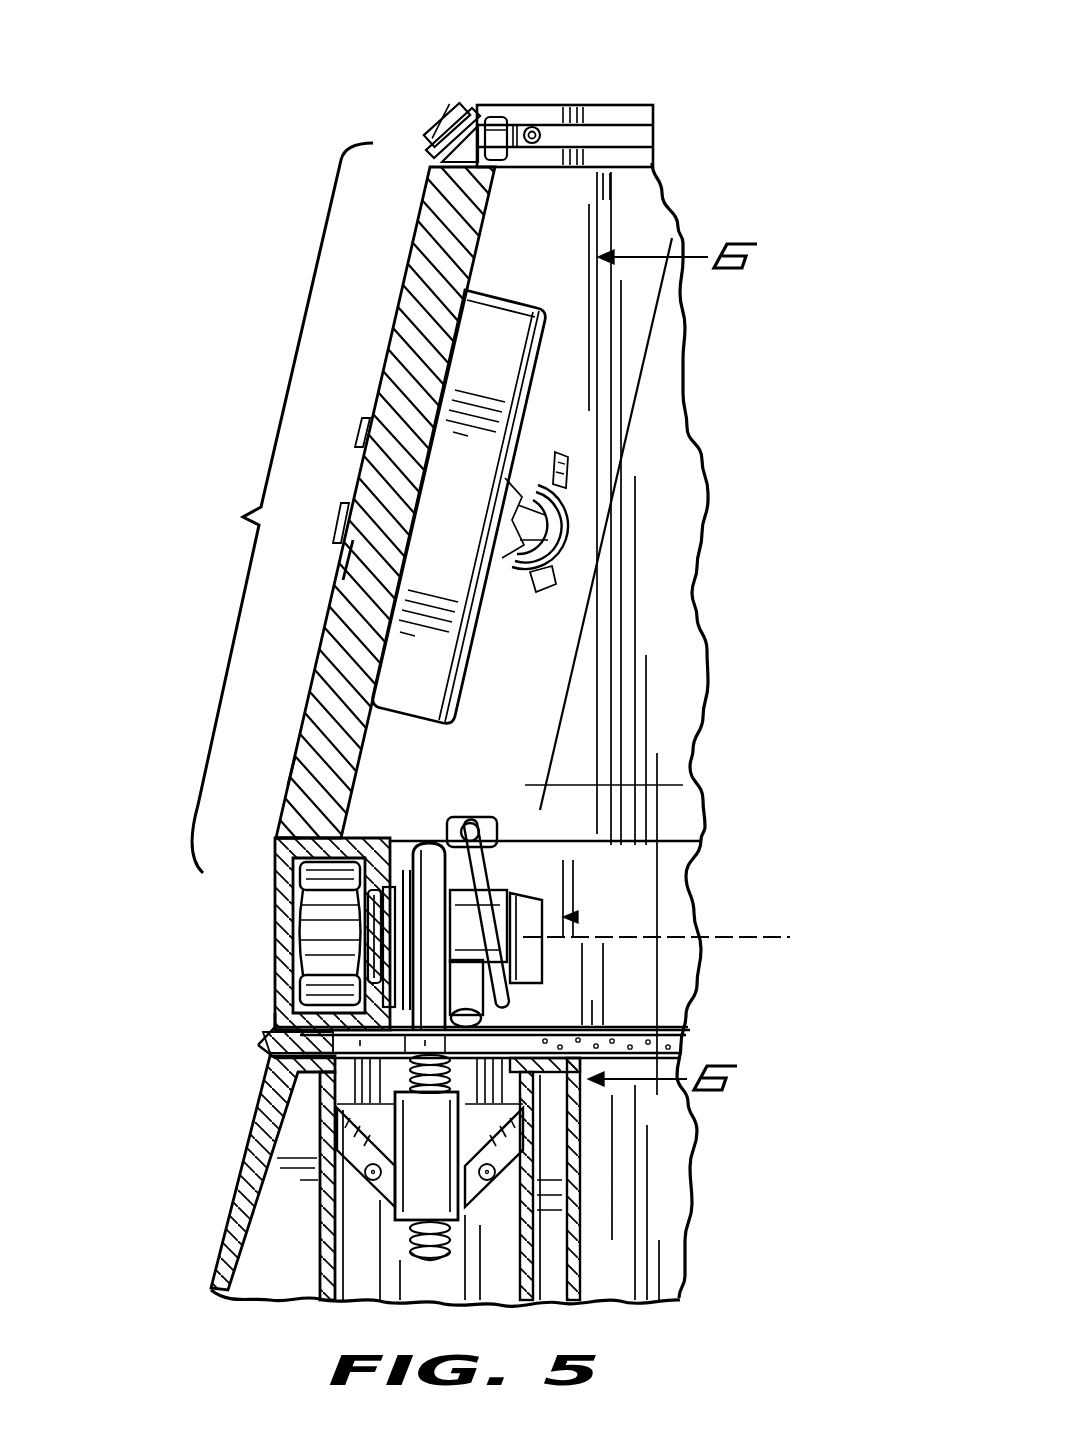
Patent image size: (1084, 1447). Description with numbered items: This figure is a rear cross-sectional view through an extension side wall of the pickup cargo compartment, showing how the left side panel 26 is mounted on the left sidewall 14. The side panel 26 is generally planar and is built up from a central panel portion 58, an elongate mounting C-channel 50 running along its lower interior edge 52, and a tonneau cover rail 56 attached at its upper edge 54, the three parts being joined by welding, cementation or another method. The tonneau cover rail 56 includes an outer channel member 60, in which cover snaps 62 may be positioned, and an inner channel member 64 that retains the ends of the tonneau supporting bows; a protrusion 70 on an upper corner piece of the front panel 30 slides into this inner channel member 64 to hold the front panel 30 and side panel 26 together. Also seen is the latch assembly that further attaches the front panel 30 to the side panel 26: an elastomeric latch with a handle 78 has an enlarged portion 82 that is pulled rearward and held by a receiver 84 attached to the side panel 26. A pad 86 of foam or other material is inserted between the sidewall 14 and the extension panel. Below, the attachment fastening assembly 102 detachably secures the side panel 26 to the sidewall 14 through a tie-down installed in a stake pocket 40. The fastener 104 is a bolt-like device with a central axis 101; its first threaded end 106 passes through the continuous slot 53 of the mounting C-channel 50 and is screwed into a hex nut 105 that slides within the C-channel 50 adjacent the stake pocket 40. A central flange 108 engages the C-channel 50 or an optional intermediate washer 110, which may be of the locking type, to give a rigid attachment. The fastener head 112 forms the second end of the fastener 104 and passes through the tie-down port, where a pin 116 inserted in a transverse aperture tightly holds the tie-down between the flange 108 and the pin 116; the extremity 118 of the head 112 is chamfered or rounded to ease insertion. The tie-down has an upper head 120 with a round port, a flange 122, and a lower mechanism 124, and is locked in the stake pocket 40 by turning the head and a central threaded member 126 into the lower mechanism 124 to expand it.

The left sidewall 14 is at (240, 1188).
The left side panel 26 is at (275, 508).
The front panel 30 is at (684, 525).
The stake pocket 40 is at (347, 1240).
The mounting C-channel 50 is at (280, 858).
The lower interior edge 52 is at (292, 822).
The continuous slot 53 is at (295, 762).
The upper edge 54 is at (440, 185).
The tonneau cover rail 56 is at (605, 60).
The central panel portion 58 is at (345, 562).
The outer channel member 60 is at (462, 110).
The cover snaps 62 is at (442, 107).
The inner channel member 64 is at (495, 110).
The protrusion 70 is at (490, 130).
The handle 78 is at (475, 352).
The enlarged portion 82 is at (522, 578).
The receiver 84 is at (552, 456).
The pad 86 is at (262, 1042).
The central axis 101 is at (795, 930).
The attachment fastening assembly 102 is at (575, 917).
The fastener 104 is at (467, 913).
The hex nut 105 is at (302, 880).
The first threaded end 106 is at (373, 948).
The central flange 108 is at (500, 845).
The intermediate washer 110 is at (393, 912).
The fastener head 112 is at (523, 928).
The pin 116 is at (511, 1010).
The extremity 118 is at (487, 1000).
The upper head 120 is at (428, 848).
The flange 122 is at (272, 1017).
The lower mechanism 124 is at (412, 1205).
The central threaded member 126 is at (387, 1073).